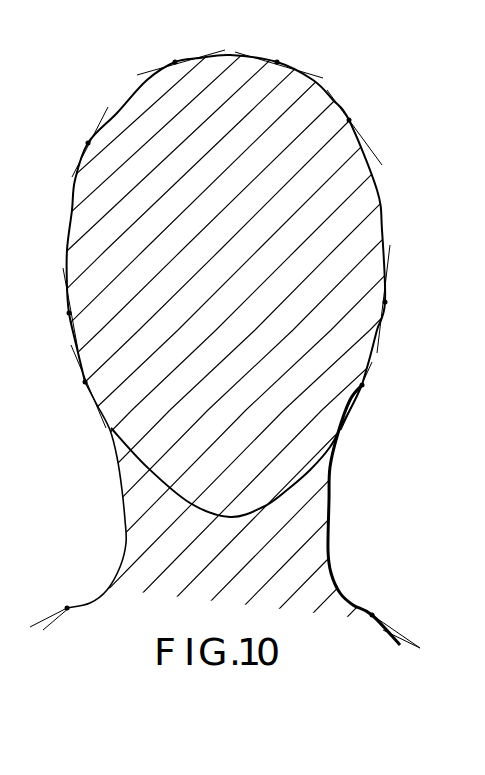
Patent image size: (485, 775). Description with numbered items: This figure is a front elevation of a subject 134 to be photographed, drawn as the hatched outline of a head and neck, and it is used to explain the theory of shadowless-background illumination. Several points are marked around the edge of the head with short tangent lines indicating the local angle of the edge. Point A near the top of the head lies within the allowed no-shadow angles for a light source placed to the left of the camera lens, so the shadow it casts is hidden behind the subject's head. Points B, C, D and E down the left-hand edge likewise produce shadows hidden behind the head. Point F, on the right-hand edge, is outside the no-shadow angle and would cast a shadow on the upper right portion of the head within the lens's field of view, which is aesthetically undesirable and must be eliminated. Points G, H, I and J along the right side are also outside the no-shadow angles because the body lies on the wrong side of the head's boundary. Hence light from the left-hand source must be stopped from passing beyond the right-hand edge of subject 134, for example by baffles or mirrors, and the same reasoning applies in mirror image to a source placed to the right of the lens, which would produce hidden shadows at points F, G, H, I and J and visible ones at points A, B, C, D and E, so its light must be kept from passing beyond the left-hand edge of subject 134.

The subject 134 is at (244, 289).
The point A is at (181, 58).
The point B is at (86, 142).
The point C is at (61, 309).
The point D is at (84, 386).
The point E is at (50, 607).
The point F is at (279, 61).
The point G is at (354, 127).
The point H is at (391, 299).
The point I is at (361, 396).
The point J is at (395, 619).